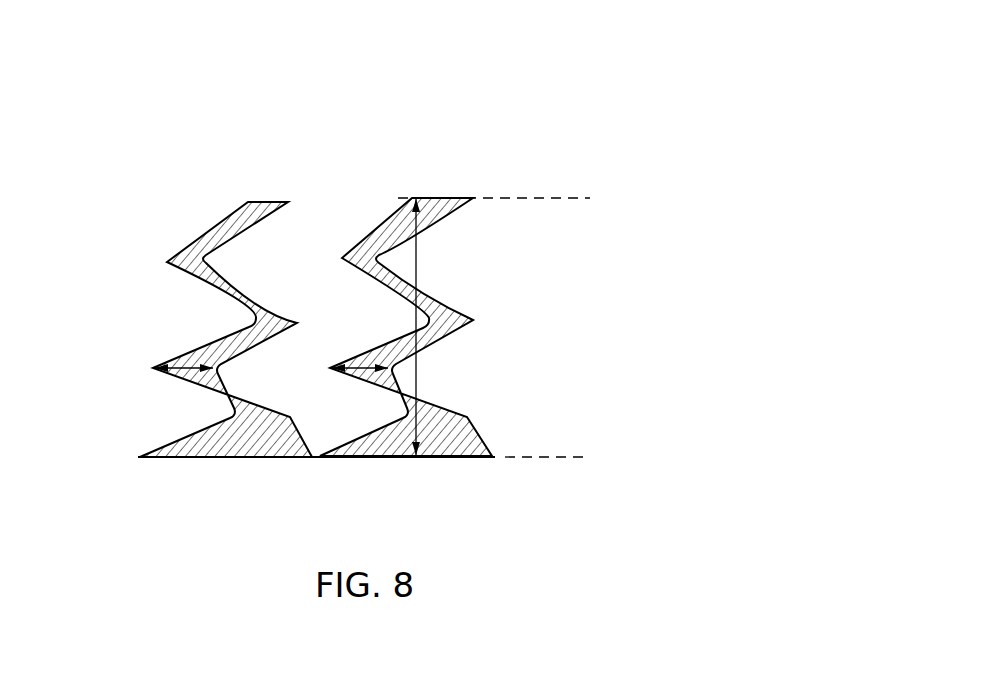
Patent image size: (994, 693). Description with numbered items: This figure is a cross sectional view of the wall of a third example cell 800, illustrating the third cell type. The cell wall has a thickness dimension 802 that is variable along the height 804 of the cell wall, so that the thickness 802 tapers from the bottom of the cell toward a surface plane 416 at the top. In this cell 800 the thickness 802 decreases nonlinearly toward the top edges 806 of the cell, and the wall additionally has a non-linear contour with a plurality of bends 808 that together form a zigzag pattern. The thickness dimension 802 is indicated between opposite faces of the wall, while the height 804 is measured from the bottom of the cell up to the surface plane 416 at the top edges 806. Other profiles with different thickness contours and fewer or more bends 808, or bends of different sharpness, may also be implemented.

The third example cell 800 is at (620, 133).
The surface plane 416 is at (510, 197).
The top edges 806 is at (262, 201).
The bends 808 is at (178, 258).
The height 804 is at (417, 260).
The thickness dimension 802 is at (177, 363).